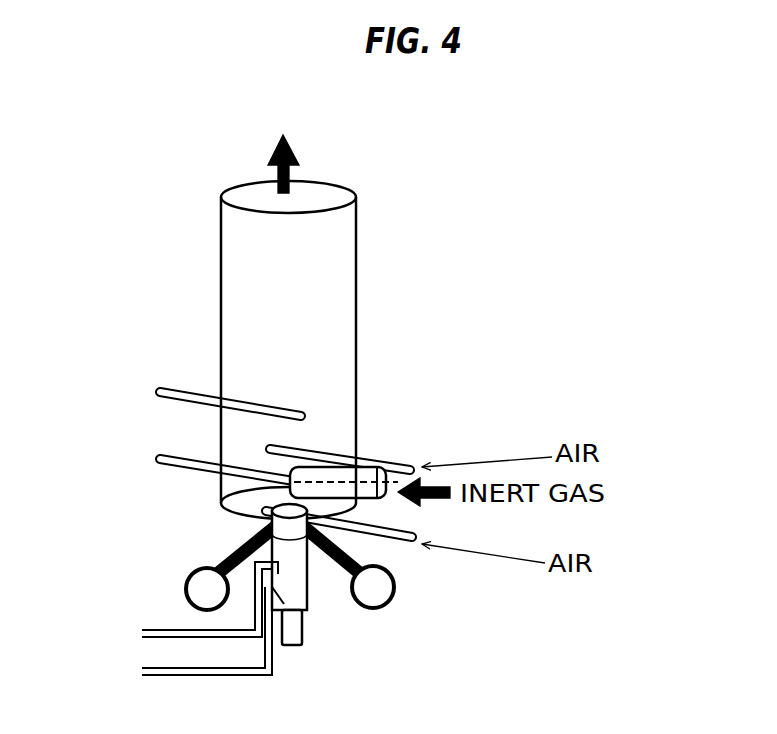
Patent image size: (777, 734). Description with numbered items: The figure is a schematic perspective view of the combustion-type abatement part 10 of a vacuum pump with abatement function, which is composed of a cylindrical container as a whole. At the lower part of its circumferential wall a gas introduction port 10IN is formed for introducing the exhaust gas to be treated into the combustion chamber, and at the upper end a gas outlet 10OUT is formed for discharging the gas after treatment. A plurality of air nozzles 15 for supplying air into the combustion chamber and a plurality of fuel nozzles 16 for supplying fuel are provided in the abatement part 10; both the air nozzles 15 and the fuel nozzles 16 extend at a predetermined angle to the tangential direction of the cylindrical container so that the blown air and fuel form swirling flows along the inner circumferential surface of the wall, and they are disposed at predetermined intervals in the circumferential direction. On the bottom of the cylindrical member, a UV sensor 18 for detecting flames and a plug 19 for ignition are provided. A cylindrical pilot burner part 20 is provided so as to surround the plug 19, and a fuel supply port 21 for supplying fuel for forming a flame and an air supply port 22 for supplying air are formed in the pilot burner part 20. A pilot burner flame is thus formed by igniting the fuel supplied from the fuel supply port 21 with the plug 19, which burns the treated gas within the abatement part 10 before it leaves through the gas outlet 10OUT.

The combustion-type abatement part 10 is at (362, 283).
The gas outlet 10OUT is at (308, 184).
The gas introduction port 10IN is at (394, 498).
The air nozzles 15 is at (172, 388).
The fuel nozzles 16 is at (170, 457).
The UV sensor 18 is at (188, 577).
The plug 19 is at (301, 621).
The pilot burner part 20 is at (308, 582).
The fuel supply port 21 is at (262, 562).
The air supply port 22 is at (272, 600).